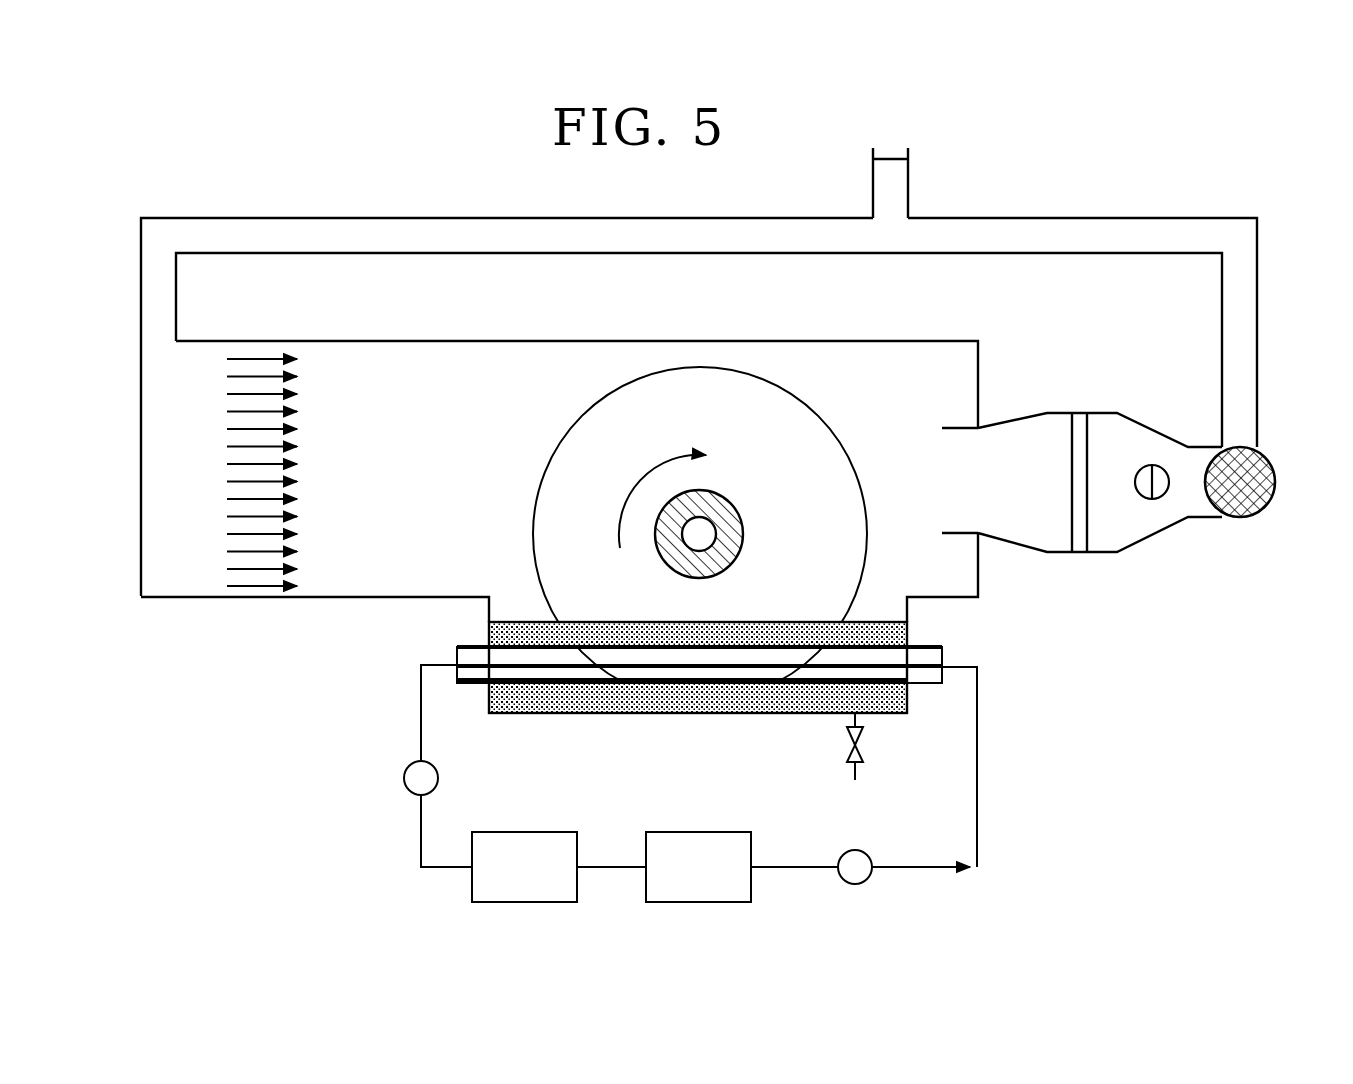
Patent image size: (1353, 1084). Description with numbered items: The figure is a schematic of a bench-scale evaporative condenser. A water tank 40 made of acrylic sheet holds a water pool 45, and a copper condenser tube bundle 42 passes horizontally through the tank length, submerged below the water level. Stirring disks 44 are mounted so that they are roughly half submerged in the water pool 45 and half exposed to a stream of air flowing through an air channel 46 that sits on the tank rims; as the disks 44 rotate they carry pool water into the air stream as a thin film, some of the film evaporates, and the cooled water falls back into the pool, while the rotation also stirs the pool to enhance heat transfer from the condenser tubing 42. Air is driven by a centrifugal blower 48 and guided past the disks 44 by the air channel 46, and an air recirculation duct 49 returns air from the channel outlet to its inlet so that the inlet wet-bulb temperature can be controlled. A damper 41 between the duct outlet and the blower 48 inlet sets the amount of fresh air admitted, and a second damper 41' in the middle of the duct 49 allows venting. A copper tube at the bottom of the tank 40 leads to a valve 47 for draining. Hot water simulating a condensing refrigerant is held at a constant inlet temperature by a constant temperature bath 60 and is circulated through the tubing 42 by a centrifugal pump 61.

The water tank 40 is at (488, 604).
The damper 41 is at (1100, 445).
The second damper 41' is at (934, 153).
The condenser tubing 42 is at (930, 645).
The stirring disks 44 is at (810, 498).
The water pool 45 is at (489, 632).
The air channel 46 is at (331, 341).
The valve 47 is at (866, 752).
The blower 48 is at (1262, 512).
The air recirculation duct 49 is at (973, 232).
The constant temperature bath 60 is at (697, 882).
The centrifugal pump 61 is at (850, 865).